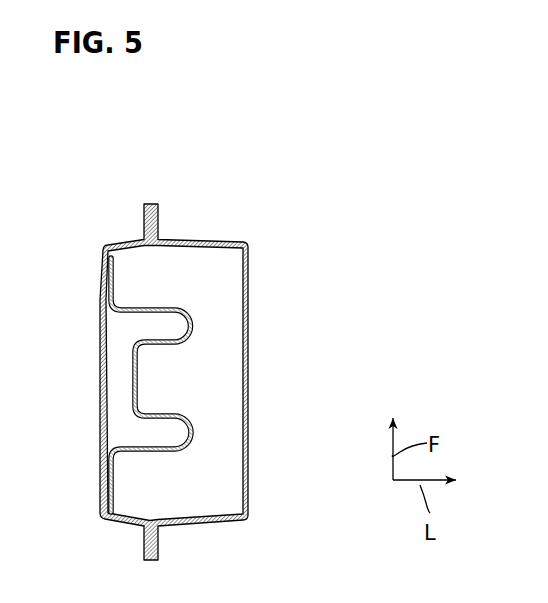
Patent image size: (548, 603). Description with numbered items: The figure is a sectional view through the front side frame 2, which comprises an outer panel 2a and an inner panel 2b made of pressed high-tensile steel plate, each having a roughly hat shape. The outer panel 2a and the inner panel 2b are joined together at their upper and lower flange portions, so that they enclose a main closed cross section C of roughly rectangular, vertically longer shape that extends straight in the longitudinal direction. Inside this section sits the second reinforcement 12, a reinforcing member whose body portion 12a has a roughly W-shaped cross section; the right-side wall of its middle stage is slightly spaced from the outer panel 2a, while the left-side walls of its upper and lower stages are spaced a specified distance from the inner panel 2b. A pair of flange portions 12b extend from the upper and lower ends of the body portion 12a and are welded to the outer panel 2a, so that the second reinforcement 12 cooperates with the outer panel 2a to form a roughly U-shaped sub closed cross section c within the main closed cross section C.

The front side frame 2 is at (248, 212).
The outer panel 2a is at (99, 381).
The inner panel 2b is at (249, 377).
The second reinforcement 12 is at (197, 450).
The body portion 12a is at (178, 350).
The flange portion 12b is at (113, 275).
The main closed cross section C is at (225, 292).
The sub closed cross section c is at (137, 346).